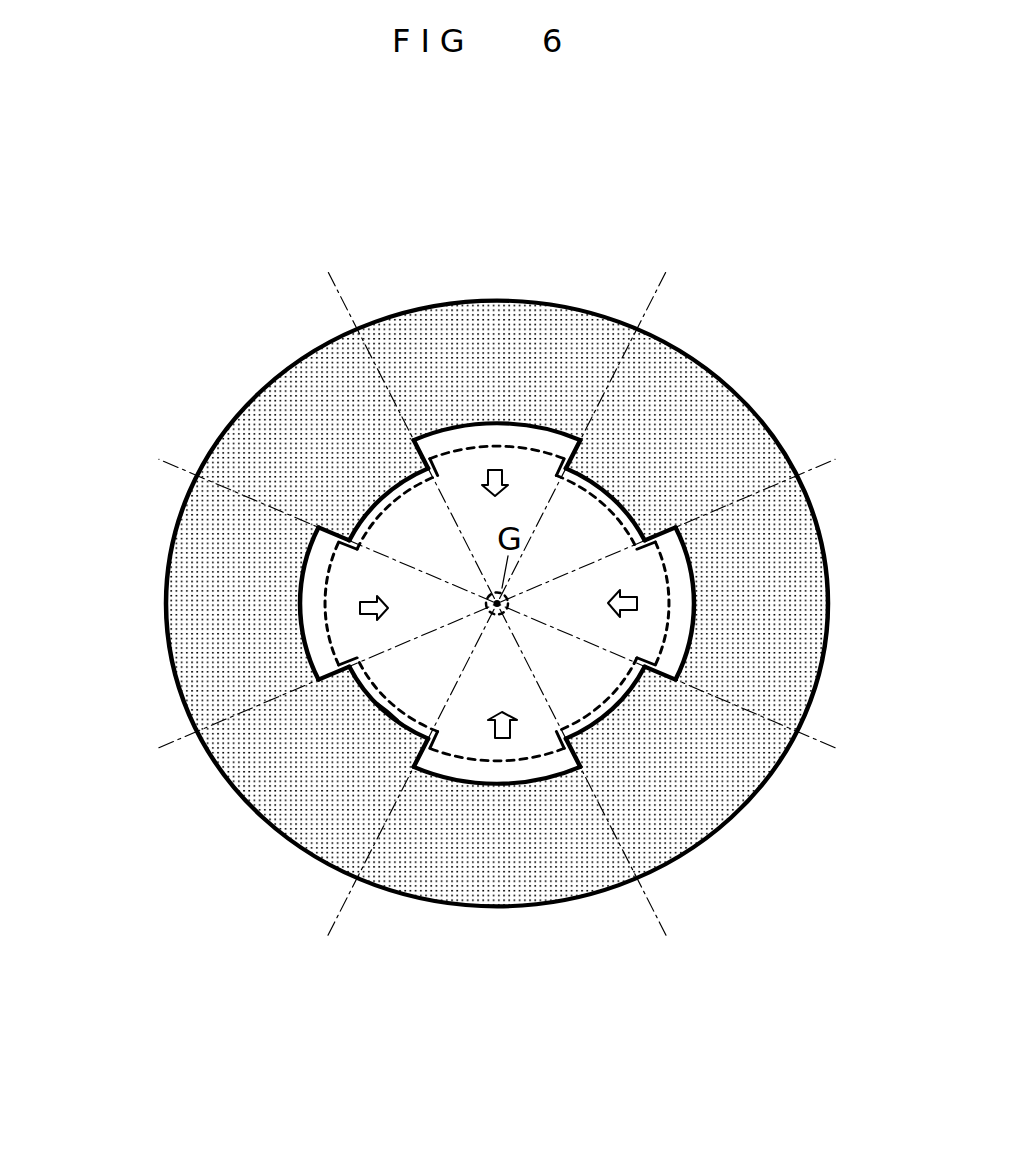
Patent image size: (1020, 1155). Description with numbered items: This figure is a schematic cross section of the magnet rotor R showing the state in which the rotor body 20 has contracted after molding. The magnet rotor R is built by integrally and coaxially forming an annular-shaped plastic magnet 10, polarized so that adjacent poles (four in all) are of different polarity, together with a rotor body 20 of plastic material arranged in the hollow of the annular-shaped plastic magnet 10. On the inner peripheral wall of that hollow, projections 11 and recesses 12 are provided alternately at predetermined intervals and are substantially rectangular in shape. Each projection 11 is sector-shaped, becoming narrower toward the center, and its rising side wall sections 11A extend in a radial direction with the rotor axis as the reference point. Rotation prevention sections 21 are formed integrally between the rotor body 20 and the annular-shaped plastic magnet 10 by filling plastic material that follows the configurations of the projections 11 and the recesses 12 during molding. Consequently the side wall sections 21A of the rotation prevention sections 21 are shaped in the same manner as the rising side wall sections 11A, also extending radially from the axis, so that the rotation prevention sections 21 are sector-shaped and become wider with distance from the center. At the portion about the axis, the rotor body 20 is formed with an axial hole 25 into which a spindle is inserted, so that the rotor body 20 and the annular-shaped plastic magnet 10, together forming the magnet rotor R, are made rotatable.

The annular-shaped plastic magnet 10 is at (253, 413).
The projection 11 is at (396, 476).
The rising side wall section 11A is at (663, 532).
The recess 12 is at (458, 436).
The rotor body 20 is at (593, 633).
The rotation prevention section 21 is at (516, 460).
The side wall section 21A is at (657, 547).
The axial hole 25 is at (380, 710).
The magnet rotor R is at (857, 328).